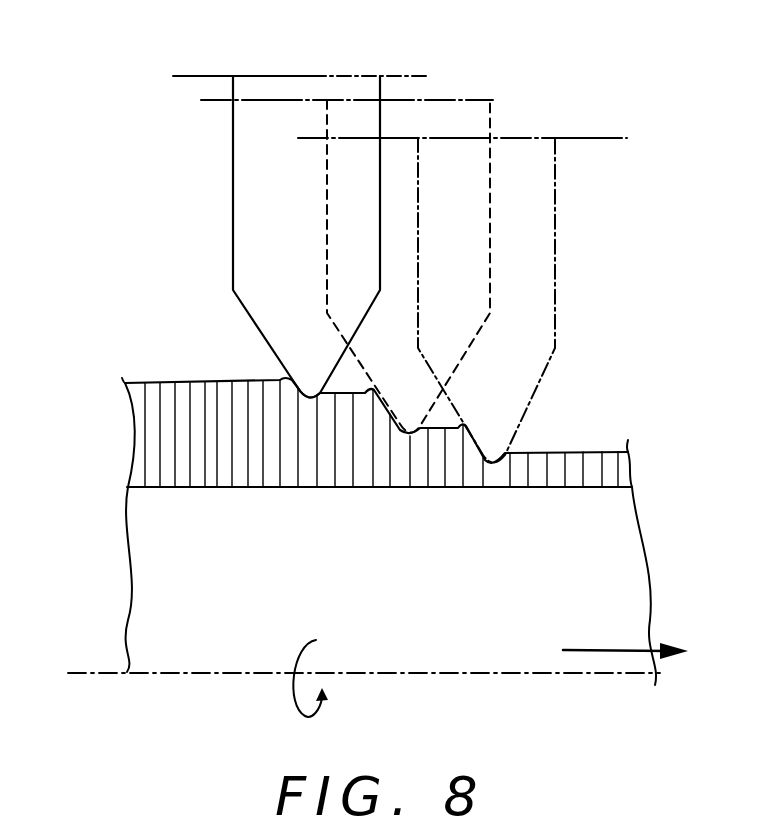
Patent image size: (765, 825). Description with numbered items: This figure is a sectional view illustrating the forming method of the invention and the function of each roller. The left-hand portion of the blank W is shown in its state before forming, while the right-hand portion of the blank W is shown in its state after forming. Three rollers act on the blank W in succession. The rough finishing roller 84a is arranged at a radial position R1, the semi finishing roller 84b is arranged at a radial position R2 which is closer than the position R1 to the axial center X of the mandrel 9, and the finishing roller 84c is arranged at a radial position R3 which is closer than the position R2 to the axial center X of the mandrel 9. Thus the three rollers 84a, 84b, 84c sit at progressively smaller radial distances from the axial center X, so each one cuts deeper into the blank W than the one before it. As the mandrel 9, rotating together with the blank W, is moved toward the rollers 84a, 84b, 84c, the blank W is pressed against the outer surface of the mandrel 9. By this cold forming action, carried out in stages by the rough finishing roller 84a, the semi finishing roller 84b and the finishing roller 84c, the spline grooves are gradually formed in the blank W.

The radial position R1 is at (276, 75).
The radial position R2 is at (370, 100).
The radial position R3 is at (484, 138).
The rough finishing roller 84a is at (242, 203).
The semi finishing roller 84b is at (490, 235).
The finishing roller 84c is at (556, 312).
The blank W is at (135, 405).
The mandrel 9 is at (135, 538).
The axial center X is at (343, 674).